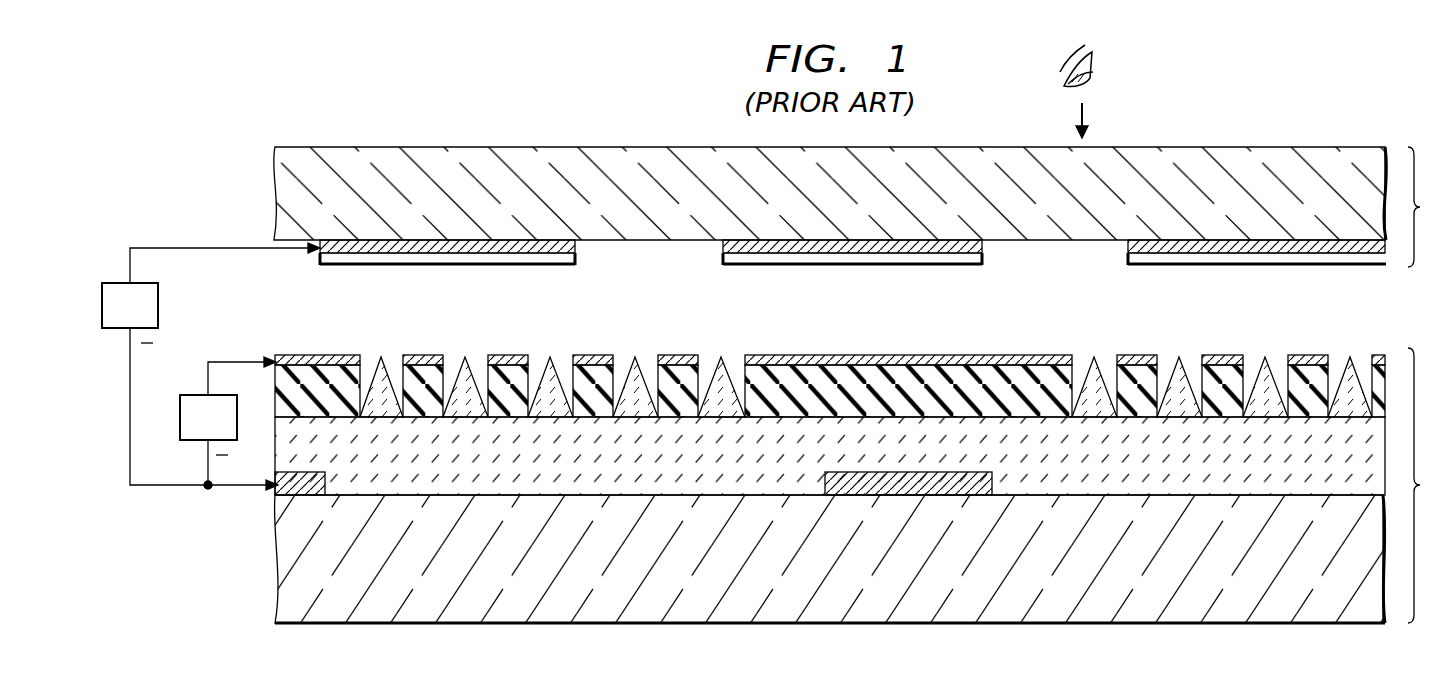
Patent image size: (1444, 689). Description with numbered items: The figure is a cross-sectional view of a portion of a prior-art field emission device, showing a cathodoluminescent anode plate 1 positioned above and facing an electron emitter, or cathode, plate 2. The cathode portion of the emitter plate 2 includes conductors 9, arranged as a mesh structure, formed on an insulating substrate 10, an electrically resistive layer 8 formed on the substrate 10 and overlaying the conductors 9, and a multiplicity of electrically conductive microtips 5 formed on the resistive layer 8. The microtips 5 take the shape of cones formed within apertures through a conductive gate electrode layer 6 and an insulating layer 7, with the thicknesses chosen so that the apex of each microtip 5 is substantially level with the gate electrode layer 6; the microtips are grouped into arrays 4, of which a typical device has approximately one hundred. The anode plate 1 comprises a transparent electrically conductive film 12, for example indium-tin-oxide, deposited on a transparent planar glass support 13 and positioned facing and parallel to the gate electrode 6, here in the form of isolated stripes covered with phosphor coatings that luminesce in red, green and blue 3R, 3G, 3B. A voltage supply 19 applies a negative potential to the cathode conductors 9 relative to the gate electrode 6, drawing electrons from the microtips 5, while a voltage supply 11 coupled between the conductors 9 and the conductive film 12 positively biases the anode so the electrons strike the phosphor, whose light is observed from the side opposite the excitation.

The anode plate 1 is at (1425, 207).
The emitter plate 2 is at (1425, 485).
The red phosphor stripe 3R is at (319, 259).
The green phosphor stripe 3G is at (724, 259).
The blue phosphor stripe 3B is at (1128, 258).
The array of microtips 4 is at (739, 334).
The microtip 5 is at (372, 373).
The gate electrode layer 6 is at (423, 355).
The insulating layer 7 is at (452, 378).
The resistive layer 8 is at (278, 450).
The conductors 9 is at (906, 496).
The insulating substrate 10 is at (279, 540).
The voltage supply 11 is at (118, 283).
The conductive film 12 is at (985, 247).
The transparent planar support 13 is at (1228, 147).
The voltage supply 19 is at (200, 395).